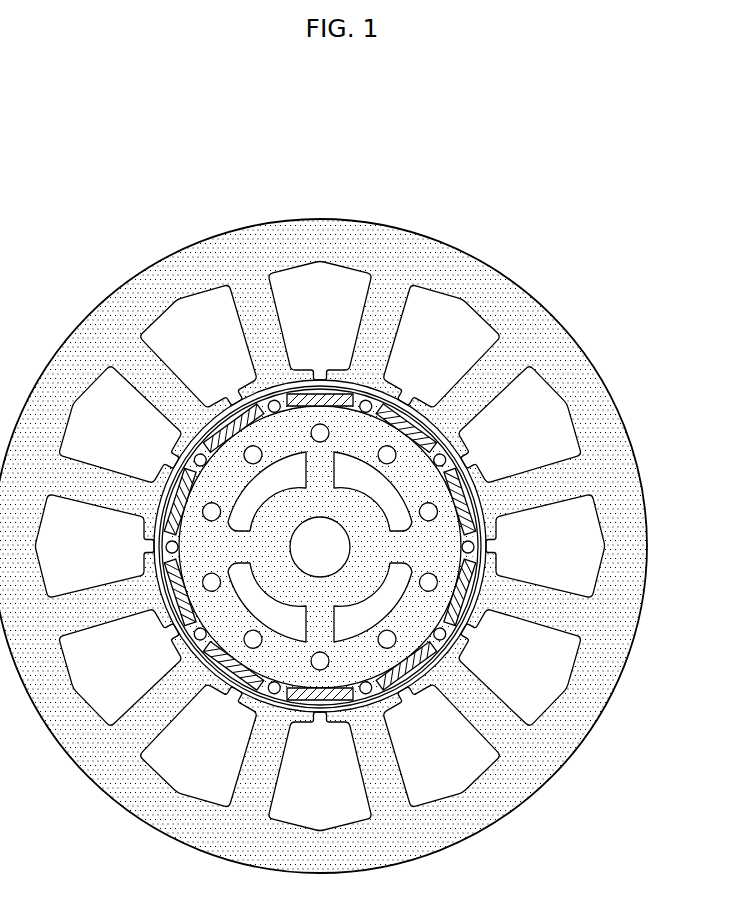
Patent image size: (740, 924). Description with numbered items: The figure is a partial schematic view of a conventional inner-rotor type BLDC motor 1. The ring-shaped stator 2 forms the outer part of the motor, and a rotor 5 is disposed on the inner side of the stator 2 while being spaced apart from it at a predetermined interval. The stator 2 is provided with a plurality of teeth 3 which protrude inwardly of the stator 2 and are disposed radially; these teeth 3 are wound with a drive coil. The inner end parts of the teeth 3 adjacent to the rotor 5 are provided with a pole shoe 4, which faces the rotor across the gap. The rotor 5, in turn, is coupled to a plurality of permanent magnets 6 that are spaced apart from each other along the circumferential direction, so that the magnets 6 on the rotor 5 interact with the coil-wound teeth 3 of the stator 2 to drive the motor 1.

The inner-rotor type BLDC motor 1 is at (528, 188).
The stator 2 is at (511, 272).
The teeth 3 is at (505, 389).
The pole shoe 4 is at (470, 600).
The rotor 5 is at (468, 512).
The permanent magnets 6 is at (478, 584).